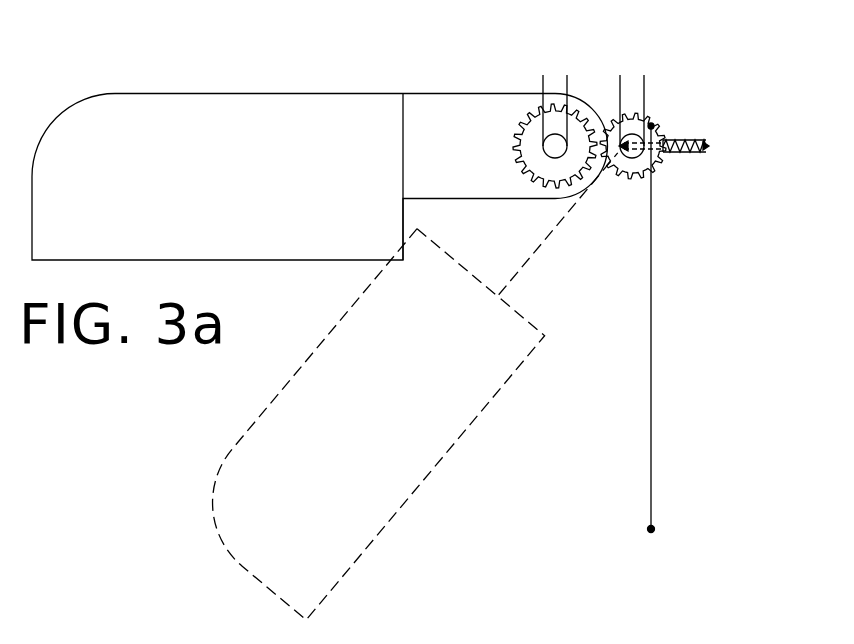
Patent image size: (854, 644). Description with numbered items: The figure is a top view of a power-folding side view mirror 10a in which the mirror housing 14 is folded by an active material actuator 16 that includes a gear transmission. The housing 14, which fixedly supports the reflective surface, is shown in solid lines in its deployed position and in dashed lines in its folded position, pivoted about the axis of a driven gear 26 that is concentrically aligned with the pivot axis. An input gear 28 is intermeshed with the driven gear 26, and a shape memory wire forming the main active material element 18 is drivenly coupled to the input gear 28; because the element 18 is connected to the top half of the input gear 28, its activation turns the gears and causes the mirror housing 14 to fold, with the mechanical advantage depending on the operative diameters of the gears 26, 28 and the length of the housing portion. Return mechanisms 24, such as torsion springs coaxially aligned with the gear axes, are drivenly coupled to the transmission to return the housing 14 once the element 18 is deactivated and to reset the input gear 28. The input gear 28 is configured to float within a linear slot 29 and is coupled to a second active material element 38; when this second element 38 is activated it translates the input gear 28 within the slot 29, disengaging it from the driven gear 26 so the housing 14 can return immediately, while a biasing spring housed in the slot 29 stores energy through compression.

The side view mirror 10a is at (217, 45).
The housing 14 is at (220, 171).
The actuator 16 is at (733, 318).
The active material element 18 is at (652, 282).
The return mechanism 24 is at (567, 76).
The driven gear 26 is at (521, 101).
The input gear 28 is at (645, 118).
The linear slot 29 is at (706, 137).
The second active material element 38 is at (678, 152).